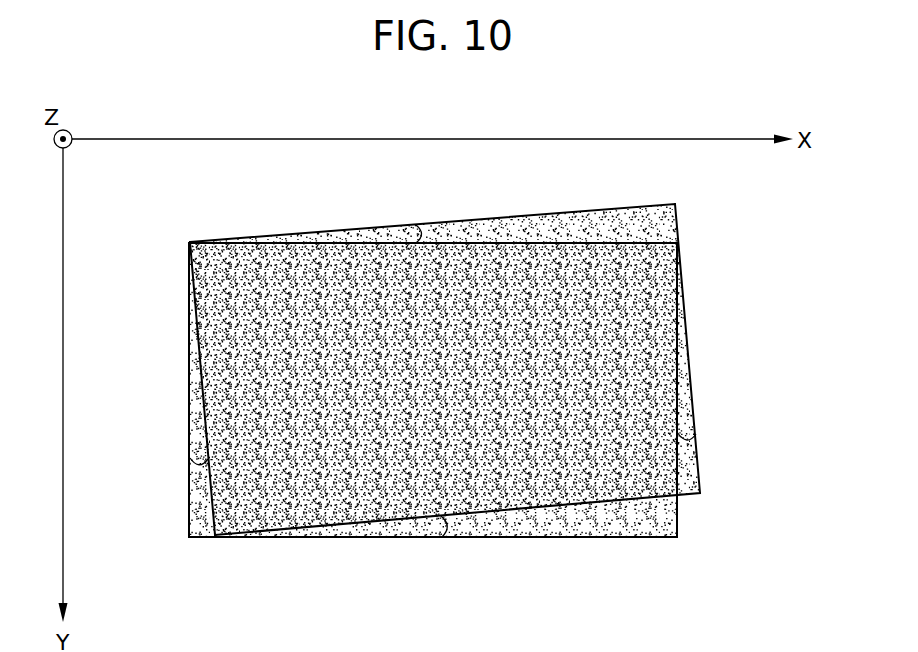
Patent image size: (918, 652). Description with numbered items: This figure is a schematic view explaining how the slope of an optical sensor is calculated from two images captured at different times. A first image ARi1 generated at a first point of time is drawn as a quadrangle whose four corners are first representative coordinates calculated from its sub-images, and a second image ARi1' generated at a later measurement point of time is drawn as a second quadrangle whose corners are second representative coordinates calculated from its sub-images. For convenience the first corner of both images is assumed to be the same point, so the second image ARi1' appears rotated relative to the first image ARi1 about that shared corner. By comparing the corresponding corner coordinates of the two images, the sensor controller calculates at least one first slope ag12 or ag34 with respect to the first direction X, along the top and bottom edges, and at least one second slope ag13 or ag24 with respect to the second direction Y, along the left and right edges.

The first image ARi1 is at (433, 419).
The second image ARi1' is at (481, 369).
The first slope ag12 is at (420, 215).
The second slope ag13 is at (172, 461).
The second slope ag24 is at (712, 434).
The first slope ag34 is at (445, 543).